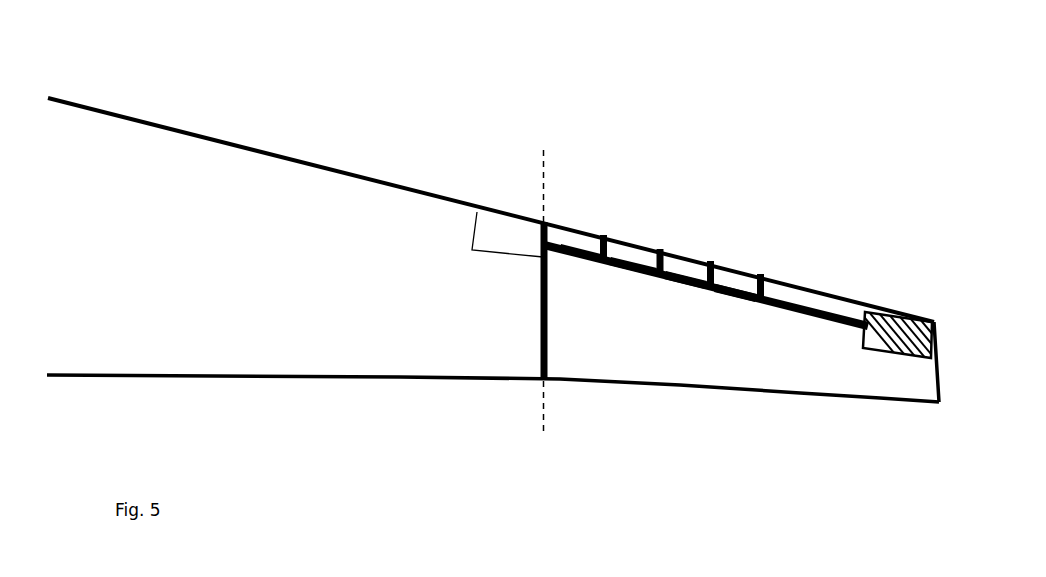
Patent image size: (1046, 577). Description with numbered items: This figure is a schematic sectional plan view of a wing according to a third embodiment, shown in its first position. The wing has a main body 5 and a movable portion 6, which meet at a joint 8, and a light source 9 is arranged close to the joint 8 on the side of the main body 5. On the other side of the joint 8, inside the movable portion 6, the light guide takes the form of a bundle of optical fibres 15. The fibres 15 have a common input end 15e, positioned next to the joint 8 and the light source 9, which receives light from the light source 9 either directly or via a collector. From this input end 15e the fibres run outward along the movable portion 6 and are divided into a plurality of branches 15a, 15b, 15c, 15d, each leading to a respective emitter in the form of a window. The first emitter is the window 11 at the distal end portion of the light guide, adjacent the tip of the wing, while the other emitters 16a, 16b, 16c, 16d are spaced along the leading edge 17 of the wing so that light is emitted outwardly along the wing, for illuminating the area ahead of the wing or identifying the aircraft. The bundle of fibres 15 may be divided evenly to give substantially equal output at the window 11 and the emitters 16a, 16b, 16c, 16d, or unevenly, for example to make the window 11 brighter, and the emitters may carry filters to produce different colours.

The main body 5 is at (172, 377).
The movable portion 6 is at (913, 400).
The joint 8 is at (541, 190).
The light source 9 is at (487, 210).
The window 11 is at (928, 320).
The bundle of optical fibres 15 is at (839, 330).
The branch 15a is at (605, 262).
The branch 15b is at (661, 278).
The branch 15c is at (709, 290).
The branch 15d is at (759, 303).
The common input end 15e is at (537, 258).
The emitter 16a is at (604, 236).
The emitter 16b is at (660, 248).
The emitter 16c is at (711, 260).
The emitter 16d is at (761, 273).
The leading edge 17 is at (222, 140).